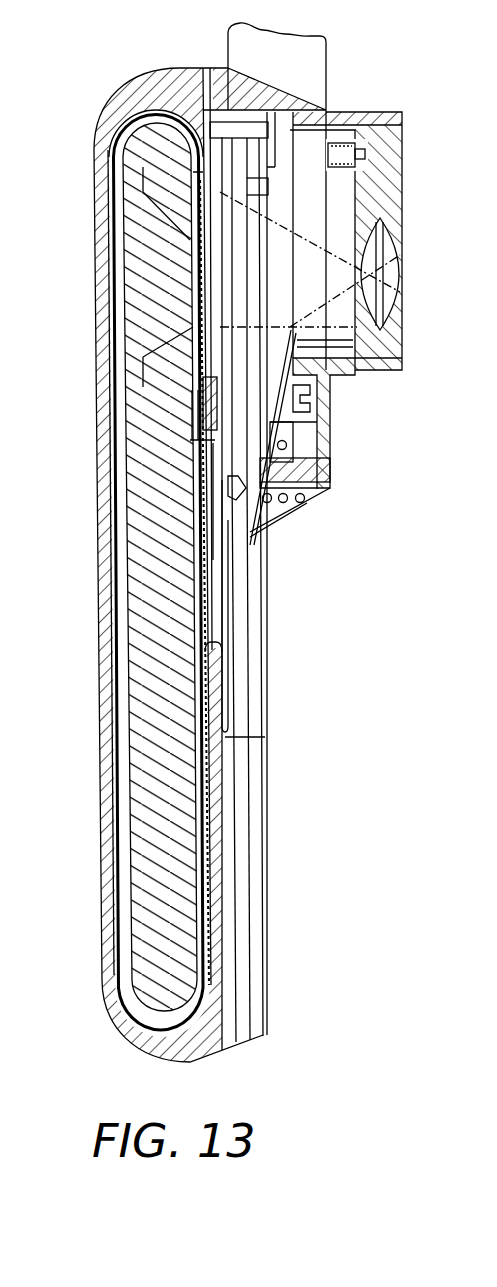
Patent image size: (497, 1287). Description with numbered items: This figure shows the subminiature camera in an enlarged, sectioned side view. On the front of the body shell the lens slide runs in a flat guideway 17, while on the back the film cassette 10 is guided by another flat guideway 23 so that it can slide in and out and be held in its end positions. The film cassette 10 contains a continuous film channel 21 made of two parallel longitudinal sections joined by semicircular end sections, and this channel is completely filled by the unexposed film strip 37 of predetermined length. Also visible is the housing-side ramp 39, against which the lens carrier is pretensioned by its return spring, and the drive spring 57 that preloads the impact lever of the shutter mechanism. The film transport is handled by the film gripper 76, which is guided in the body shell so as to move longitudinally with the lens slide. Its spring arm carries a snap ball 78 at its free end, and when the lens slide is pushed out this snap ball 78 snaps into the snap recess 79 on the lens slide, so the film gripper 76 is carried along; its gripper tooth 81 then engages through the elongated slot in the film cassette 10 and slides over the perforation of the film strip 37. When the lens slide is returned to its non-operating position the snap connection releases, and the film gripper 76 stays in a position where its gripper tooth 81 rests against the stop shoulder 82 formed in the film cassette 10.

The film cassette 10 is at (150, 95).
The film strip 37 is at (105, 250).
The film channel 21 is at (120, 386).
The gripper tooth 81 is at (192, 440).
The snap ball 78 is at (230, 490).
The stop shoulder 82 is at (207, 645).
The housing-side ramp 39 is at (273, 422).
The drive spring 57 is at (322, 502).
The snap recess 79 is at (290, 520).
The film gripper 76 is at (232, 688).
The flat guideway 17 is at (250, 727).
The flat guideway 23 is at (227, 780).